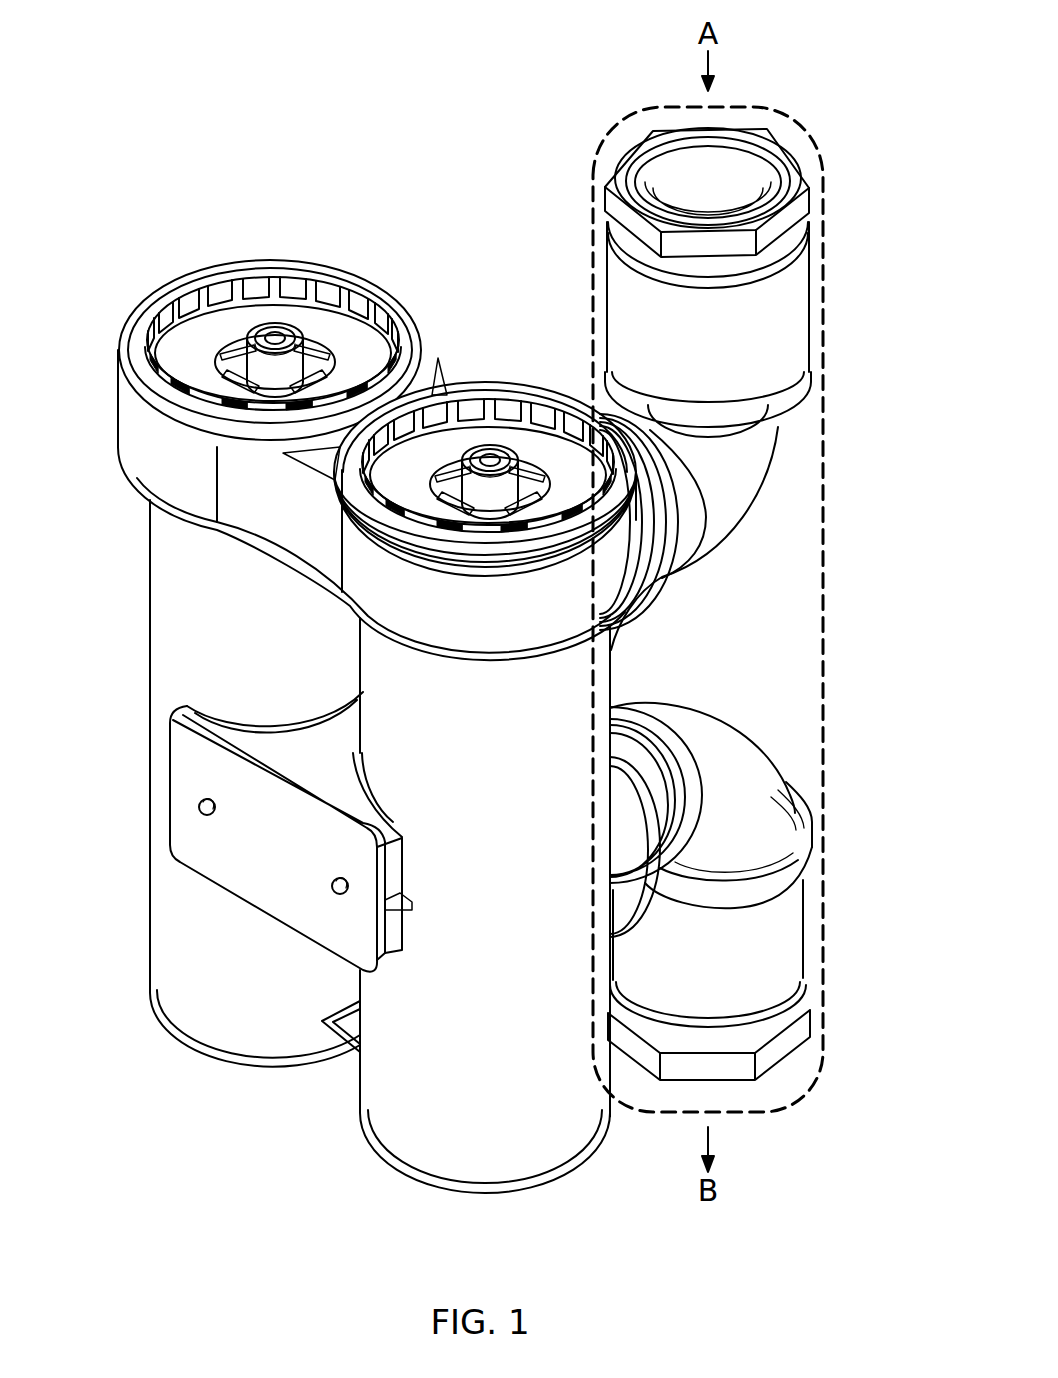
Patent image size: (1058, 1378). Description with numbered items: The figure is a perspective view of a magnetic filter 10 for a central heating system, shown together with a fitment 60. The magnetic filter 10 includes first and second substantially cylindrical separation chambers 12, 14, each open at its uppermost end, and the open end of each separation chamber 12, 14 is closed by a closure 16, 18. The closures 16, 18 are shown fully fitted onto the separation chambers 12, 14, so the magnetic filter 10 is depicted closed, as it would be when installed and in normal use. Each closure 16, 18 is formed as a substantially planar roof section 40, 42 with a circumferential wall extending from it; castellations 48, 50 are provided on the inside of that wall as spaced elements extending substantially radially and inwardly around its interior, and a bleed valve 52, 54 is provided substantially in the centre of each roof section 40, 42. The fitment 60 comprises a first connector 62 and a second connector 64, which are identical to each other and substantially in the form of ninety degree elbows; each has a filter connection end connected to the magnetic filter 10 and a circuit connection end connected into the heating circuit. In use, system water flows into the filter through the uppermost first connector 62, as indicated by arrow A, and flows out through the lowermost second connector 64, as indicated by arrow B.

The magnetic filter 10 is at (342, 715).
The first separation chamber 12 is at (148, 967).
The second separation chamber 14 is at (530, 1163).
The closure 16 is at (234, 315).
The closure 18 is at (485, 424).
The roof section 40 is at (224, 300).
The roof section 42 is at (488, 409).
The castellations 48 is at (273, 290).
The castellations 50 is at (488, 380).
The bleed valve 52 is at (260, 362).
The bleed valve 54 is at (490, 421).
The fitment 60 is at (743, 609).
The first connector 62 is at (788, 353).
The second connector 64 is at (788, 948).